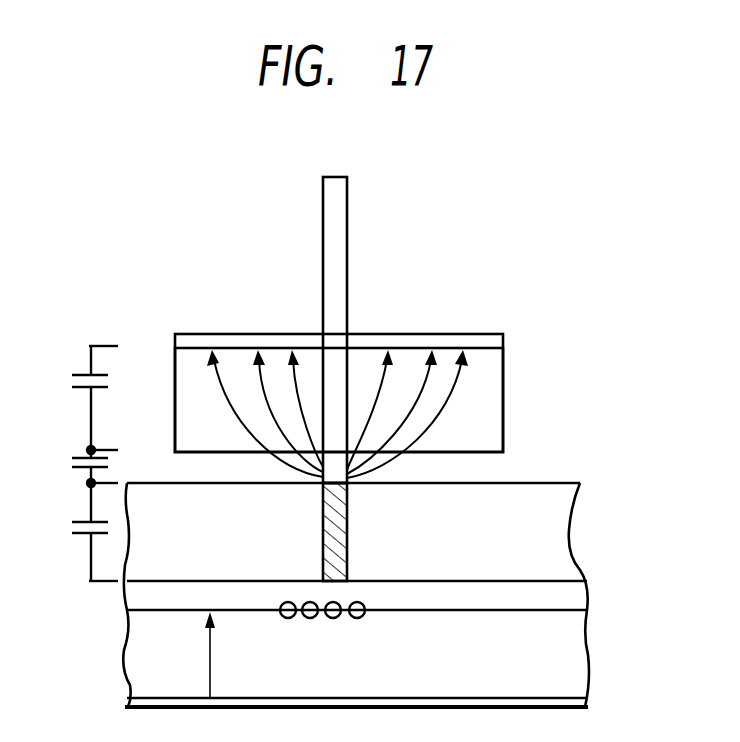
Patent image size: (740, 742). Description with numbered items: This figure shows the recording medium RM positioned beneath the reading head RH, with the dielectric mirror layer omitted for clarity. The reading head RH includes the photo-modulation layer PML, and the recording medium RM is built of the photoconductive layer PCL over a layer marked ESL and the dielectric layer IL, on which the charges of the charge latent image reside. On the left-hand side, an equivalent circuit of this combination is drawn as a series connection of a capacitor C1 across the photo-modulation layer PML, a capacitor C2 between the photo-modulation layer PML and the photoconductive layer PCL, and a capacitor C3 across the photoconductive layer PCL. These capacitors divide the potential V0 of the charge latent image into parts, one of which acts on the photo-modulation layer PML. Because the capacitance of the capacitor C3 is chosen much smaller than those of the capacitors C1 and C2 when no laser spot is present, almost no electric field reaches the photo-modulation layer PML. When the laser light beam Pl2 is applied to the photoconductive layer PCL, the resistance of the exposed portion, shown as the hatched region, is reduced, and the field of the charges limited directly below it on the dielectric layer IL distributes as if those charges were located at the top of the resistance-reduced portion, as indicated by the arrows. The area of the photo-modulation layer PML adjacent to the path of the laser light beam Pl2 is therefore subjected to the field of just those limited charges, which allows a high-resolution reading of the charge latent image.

The laser light beam Pl2 is at (347, 226).
The reading head RH is at (392, 403).
The photo-modulation layer PML is at (523, 351).
The recording medium RM is at (419, 584).
The photoconductive layer PCL is at (568, 550).
The electron storage layer ESL is at (587, 600).
The dielectric layer IL is at (587, 662).
The potential of the charge latent image V0 is at (196, 655).
The capacitor C1 is at (77, 383).
The capacitor C2 is at (77, 464).
The capacitor C3 is at (77, 529).